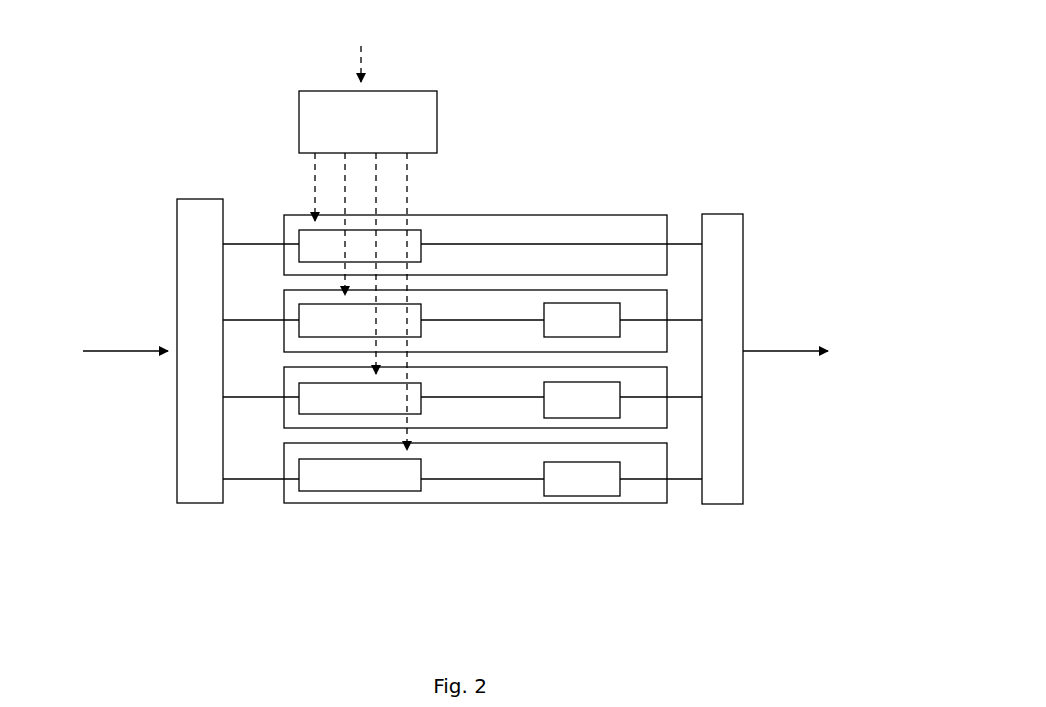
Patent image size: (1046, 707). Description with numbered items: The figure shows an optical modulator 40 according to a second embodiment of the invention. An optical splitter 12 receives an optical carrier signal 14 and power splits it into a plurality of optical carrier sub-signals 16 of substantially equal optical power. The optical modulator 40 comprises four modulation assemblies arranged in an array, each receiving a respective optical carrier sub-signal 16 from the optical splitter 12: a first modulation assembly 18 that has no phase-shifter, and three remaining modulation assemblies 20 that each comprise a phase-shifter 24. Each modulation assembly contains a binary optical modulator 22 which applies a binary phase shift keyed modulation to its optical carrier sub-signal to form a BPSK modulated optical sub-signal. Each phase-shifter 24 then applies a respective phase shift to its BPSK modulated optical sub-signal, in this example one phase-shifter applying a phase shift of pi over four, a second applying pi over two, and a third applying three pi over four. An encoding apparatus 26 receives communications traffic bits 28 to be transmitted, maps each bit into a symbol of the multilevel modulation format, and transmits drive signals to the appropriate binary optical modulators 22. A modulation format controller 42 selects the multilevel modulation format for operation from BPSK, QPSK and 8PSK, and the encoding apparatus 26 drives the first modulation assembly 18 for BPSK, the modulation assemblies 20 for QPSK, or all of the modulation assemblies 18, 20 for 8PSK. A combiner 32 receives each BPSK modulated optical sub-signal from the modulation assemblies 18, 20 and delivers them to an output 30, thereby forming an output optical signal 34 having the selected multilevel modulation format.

The optical splitter 12 is at (193, 493).
The optical carrier signal 14 is at (130, 350).
The optical carrier sub-signals 16 is at (238, 481).
The first modulation assembly 18 is at (605, 228).
The modulation assemblies 20 is at (513, 489).
The binary optical modulator 22 is at (405, 245).
The phase-shifter 24 is at (590, 488).
The encoding apparatus 26 is at (315, 122).
The communications traffic bits 28 is at (361, 62).
The output 30 is at (764, 376).
The combiner 32 is at (728, 213).
The output optical signal 34 is at (803, 350).
The optical modulator 40 is at (653, 55).
The modulation format controller 42 is at (422, 107).